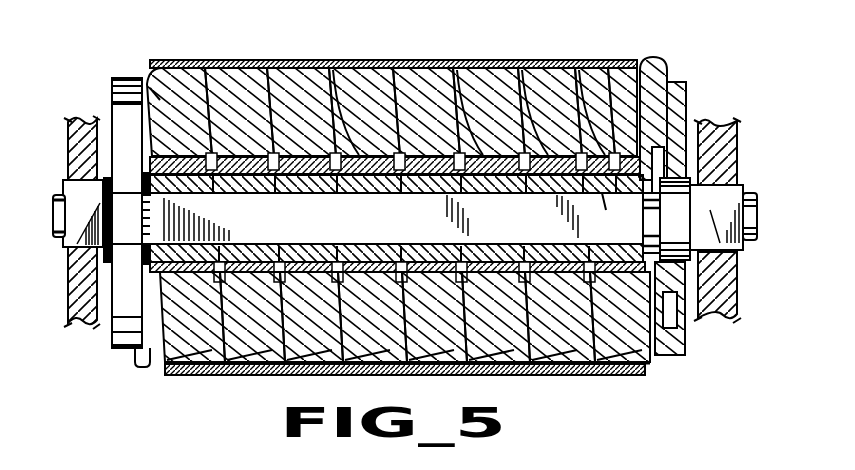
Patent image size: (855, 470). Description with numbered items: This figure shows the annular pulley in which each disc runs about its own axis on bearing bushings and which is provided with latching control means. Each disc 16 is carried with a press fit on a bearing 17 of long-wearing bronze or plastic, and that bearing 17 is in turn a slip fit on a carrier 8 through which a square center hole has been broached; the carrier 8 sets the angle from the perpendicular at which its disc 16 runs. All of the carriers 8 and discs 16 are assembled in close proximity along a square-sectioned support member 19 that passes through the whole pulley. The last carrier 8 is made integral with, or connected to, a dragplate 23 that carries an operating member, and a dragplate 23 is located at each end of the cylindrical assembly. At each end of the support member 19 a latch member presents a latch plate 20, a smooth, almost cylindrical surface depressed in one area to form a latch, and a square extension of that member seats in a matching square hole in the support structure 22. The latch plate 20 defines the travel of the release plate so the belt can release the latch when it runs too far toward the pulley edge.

The carrier 8 is at (455, 73).
The disc 16 is at (150, 86).
The bearing 17 is at (347, 70).
The support member 19 is at (598, 62).
The latch plate 20 is at (727, 317).
The support structure 22 is at (91, 318).
The dragplate 23 is at (137, 302).